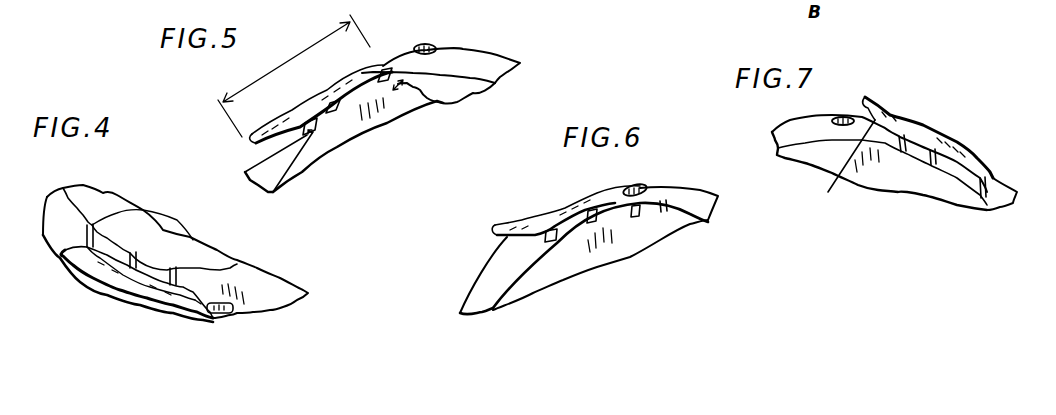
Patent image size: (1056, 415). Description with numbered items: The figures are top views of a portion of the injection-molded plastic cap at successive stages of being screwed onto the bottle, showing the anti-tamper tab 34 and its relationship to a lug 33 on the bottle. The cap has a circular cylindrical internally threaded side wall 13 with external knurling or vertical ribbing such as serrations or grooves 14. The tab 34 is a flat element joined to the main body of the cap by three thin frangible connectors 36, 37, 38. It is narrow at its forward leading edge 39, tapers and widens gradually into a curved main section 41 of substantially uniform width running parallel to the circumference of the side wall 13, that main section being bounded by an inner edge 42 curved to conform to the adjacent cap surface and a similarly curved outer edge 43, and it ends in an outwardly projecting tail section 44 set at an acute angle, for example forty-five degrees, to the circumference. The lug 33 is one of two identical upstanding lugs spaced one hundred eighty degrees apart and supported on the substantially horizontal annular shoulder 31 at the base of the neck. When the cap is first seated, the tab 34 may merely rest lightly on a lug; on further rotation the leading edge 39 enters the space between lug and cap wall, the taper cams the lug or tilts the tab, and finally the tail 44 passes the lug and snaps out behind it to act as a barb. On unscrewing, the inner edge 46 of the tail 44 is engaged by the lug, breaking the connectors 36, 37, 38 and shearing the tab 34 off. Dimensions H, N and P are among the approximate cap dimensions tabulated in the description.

In FIG. 4, the side wall 13 is at (187, 242).
In FIG. 5, the side wall 13 is at (352, 128).
In FIG. 6, the side wall 13 is at (575, 250).
In FIG. 7, the side wall 13 is at (822, 162).
In FIG. 4, the grooves 14 is at (250, 270).
In FIG. 4, the annular shoulder 31 is at (258, 295).
In FIG. 5, the annular shoulder 31 is at (487, 62).
In FIG. 6, the annular shoulder 31 is at (483, 280).
In FIG. 7, the annular shoulder 31 is at (795, 133).
In FIG. 4, the lug 33 is at (233, 314).
In FIG. 5, the lug 33 is at (433, 44).
In FIG. 6, the lug 33 is at (637, 183).
In FIG. 7, the lug 33 is at (841, 117).
In FIG. 4, the tab 34 is at (137, 283).
In FIG. 6, the tab 34 is at (557, 217).
In FIG. 7, the tab 34 is at (957, 138).
In FIG. 4, the thin connector 36 is at (107, 197).
In FIG. 5, the thin connector 36 is at (390, 78).
In FIG. 6, the thin connector 36 is at (667, 212).
In FIG. 7, the thin connector 36 is at (980, 200).
In FIG. 4, the thin connector 37 is at (157, 232).
In FIG. 5, the thin connector 37 is at (336, 112).
In FIG. 6, the thin connector 37 is at (607, 223).
In FIG. 7, the thin connector 37 is at (933, 160).
In FIG. 4, the thin connector 38 is at (218, 258).
In FIG. 5, the thin connector 38 is at (312, 133).
In FIG. 6, the thin connector 38 is at (533, 290).
In FIG. 7, the thin connector 38 is at (900, 152).
In FIG. 4, the leading edge 39 is at (63, 250).
In FIG. 5, the leading edge 39 is at (378, 66).
In FIG. 7, the leading edge 39 is at (993, 172).
In FIG. 4, the main section 41 is at (100, 275).
In FIG. 5, the main section 41 is at (317, 91).
In FIG. 6, the main section 41 is at (600, 200).
In FIG. 7, the main section 41 is at (910, 128).
In FIG. 4, the inner edge 42 is at (123, 223).
In FIG. 5, the inner edge 42 is at (363, 87).
In FIG. 6, the inner edge 42 is at (633, 217).
In FIG. 7, the inner edge 42 is at (967, 160).
In FIG. 4, the outer edge 43 is at (125, 285).
In FIG. 5, the outer edge 43 is at (300, 103).
In FIG. 6, the outer edge 43 is at (553, 210).
In FIG. 4, the tail section 44 is at (200, 312).
In FIG. 5, the tail section 44 is at (252, 138).
In FIG. 6, the tail section 44 is at (513, 225).
In FIG. 7, the tail section 44 is at (893, 105).
In FIG. 6, the inner edge of tail 46 is at (503, 233).
In FIG. 7, the inner edge of tail 46 is at (828, 192).
In FIG. 5, the dimension H is at (294, 76).
In FIG. 5, the dimension N is at (247, 170).
In FIG. 5, the dimension P is at (447, 102).